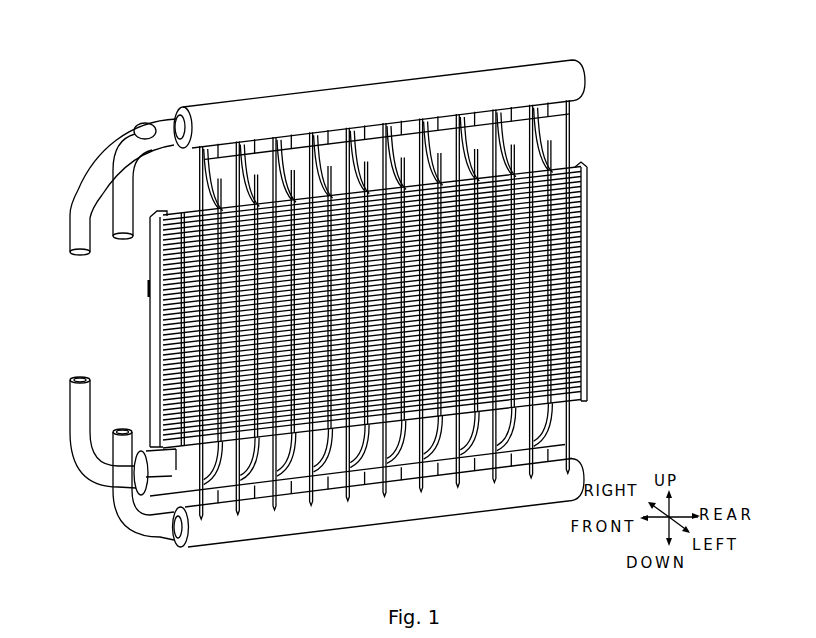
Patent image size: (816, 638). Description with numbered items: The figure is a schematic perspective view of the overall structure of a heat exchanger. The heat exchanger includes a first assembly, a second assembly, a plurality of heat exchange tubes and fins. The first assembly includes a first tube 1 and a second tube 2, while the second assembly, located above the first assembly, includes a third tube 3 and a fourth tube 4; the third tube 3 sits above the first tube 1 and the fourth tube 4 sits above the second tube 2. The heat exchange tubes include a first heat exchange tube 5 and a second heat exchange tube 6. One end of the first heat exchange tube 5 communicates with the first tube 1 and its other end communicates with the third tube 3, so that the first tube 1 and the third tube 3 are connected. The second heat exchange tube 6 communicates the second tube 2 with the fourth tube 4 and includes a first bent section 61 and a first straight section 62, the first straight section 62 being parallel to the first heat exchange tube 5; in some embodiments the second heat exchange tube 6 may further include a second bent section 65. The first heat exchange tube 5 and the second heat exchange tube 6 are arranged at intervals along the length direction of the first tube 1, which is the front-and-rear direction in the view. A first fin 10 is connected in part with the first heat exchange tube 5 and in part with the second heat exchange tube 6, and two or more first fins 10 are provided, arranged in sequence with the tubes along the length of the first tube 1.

The first tube 1 is at (447, 505).
The second tube 2 is at (150, 492).
The third tube 3 is at (522, 87).
The fourth tube 4 is at (145, 118).
The first heat exchange tube 5 is at (304, 143).
The second heat exchange tube 6 is at (361, 163).
The first fin 10 is at (182, 283).
The first bent section 61 is at (538, 418).
The first straight section 62 is at (582, 278).
The second bent section 65 is at (546, 144).